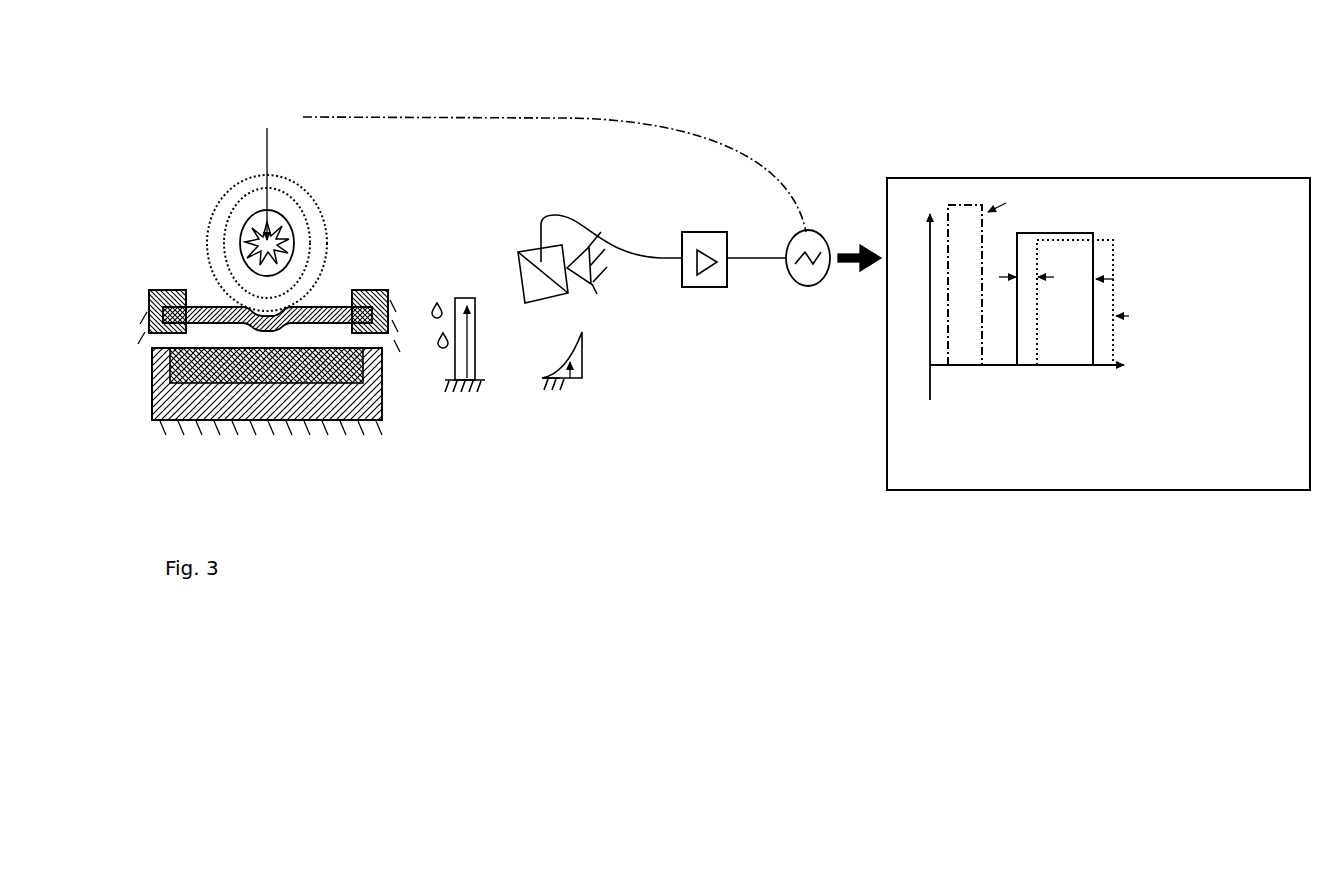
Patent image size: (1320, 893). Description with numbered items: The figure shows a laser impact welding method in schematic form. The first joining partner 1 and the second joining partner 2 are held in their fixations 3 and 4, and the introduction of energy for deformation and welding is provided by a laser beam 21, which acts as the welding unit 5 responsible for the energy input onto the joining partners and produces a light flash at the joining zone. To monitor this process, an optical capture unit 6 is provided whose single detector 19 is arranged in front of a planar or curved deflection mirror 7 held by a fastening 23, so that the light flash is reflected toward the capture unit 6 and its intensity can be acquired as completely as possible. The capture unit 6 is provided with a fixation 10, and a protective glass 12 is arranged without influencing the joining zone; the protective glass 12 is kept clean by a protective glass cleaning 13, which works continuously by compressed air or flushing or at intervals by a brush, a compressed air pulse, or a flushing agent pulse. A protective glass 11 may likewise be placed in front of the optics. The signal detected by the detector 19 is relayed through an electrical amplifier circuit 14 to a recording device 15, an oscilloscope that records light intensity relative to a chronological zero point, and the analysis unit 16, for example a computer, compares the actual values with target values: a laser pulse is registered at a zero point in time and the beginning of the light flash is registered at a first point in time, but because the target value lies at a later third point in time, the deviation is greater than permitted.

The first joining partner 1 is at (198, 312).
The second joining partner 2 is at (192, 365).
The fixation 3 is at (167, 405).
The fixation 4 is at (158, 300).
The welding unit 5 is at (250, 240).
The optical capture unit 6 is at (580, 274).
The deflection mirror 7 is at (571, 392).
The fixation 10 is at (584, 256).
The protective glass 11 is at (468, 392).
The protective glass 12 is at (474, 392).
The protective glass cleaning 13 is at (443, 348).
The electrical amplifier circuit 14 is at (702, 234).
The recording device 15 is at (821, 237).
The analysis unit 16 is at (917, 176).
The detector 19 is at (542, 256).
The laser beam 21 is at (266, 108).
The fastening 23 is at (560, 392).